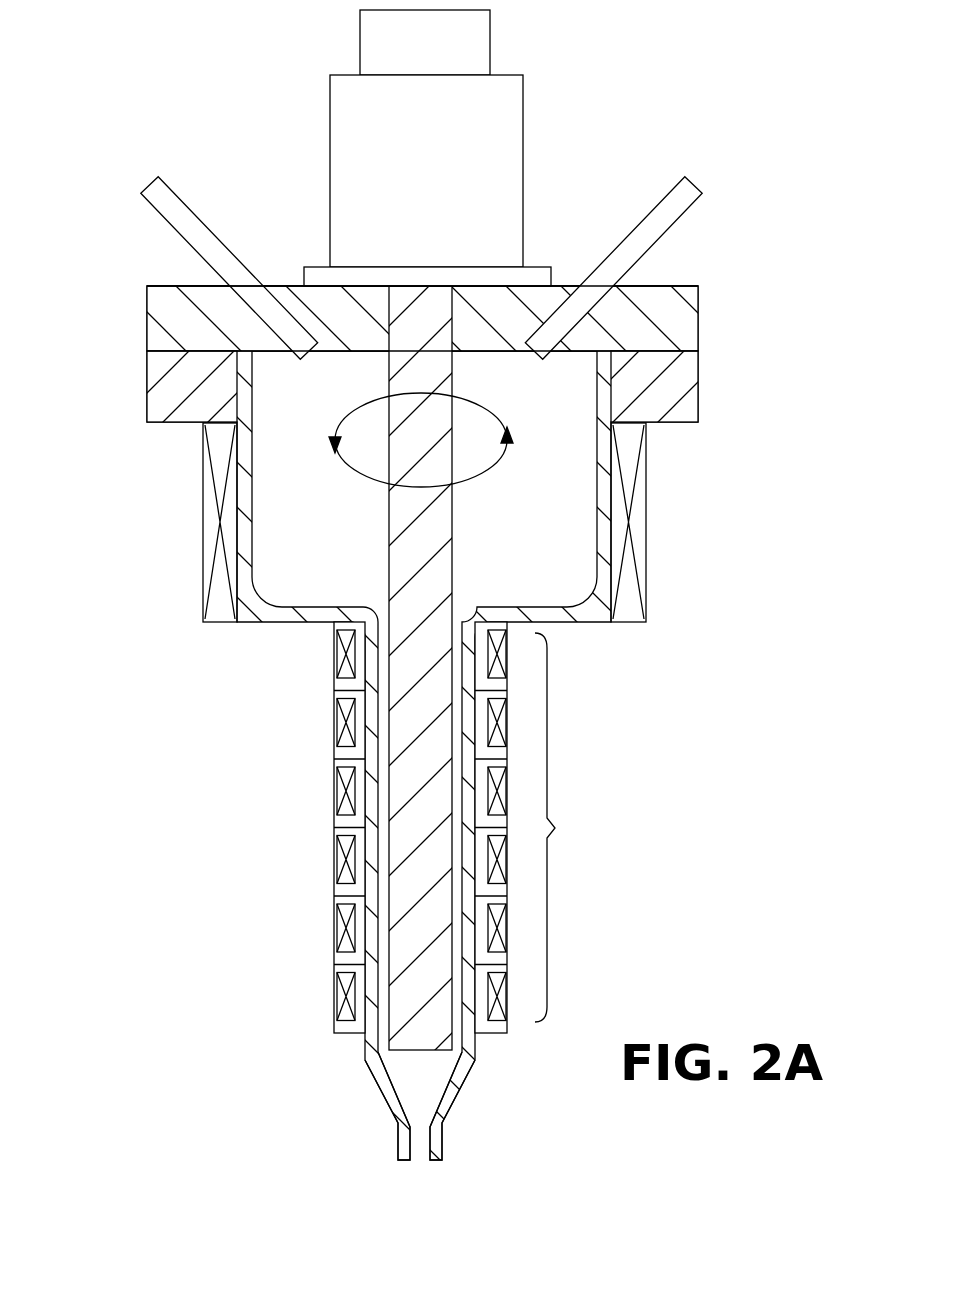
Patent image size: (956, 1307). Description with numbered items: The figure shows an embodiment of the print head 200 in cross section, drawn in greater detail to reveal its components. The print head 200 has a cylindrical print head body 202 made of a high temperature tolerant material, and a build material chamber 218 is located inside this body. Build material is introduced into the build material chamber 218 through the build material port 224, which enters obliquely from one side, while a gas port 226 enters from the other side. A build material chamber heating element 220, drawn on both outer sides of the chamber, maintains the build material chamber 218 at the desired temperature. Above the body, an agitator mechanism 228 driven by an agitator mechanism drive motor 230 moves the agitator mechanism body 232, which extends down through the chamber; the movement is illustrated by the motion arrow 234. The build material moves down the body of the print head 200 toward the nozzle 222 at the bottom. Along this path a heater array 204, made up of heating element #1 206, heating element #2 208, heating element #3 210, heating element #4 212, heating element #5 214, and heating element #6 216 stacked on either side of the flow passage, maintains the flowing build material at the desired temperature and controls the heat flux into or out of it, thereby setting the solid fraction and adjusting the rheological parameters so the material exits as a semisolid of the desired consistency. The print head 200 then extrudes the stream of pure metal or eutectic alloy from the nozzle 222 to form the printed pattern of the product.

The print head 200 is at (632, 64).
The print head body 202 is at (265, 628).
The heater array 204 is at (419, 827).
The heating element #1 206 is at (475, 705).
The heating element #2 208 is at (475, 756).
The heating element #3 210 is at (475, 807).
The heating element #4 212 is at (475, 866).
The heating element #5 214 is at (475, 920).
The heating element #6 216 is at (476, 964).
The build material chamber 218 is at (343, 540).
The build material chamber heating element 220 is at (203, 552).
The nozzle 222 is at (382, 1093).
The build material port 224 is at (703, 188).
The gas port 226 is at (143, 186).
The agitator mechanism 228 is at (452, 180).
The agitator mechanism drive motor 230 is at (452, 53).
The agitator mechanism body 232 is at (453, 581).
The motion arrow 234 is at (485, 476).